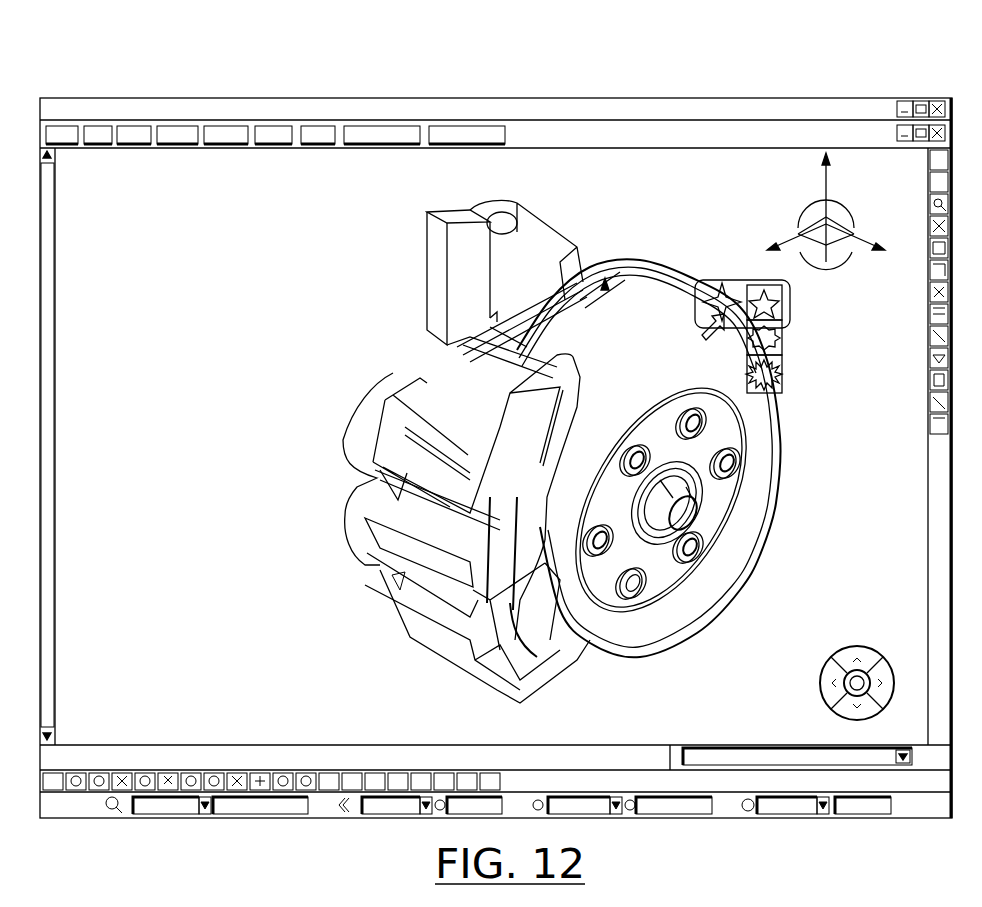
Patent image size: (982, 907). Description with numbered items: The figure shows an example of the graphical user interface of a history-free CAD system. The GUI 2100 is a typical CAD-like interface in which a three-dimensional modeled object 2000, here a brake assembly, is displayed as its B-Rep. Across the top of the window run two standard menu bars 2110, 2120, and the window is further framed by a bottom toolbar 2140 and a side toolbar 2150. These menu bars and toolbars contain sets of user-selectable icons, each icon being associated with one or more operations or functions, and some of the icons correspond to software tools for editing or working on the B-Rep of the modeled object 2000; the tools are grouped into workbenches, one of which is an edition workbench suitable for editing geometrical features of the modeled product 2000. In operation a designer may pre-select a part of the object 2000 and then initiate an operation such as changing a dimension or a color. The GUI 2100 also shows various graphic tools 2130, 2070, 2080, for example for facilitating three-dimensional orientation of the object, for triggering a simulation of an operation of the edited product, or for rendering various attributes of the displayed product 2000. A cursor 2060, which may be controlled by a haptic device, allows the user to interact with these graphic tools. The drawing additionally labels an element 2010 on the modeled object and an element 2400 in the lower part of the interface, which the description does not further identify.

The 3D modeled object 2000 is at (385, 270).
The brake caliper 2010 is at (445, 377).
The cursor 2060 is at (712, 336).
The graphic tool 2070 is at (736, 285).
The graphic tool 2080 is at (782, 340).
The GUI 2100 is at (757, 670).
The menu bar 2110 is at (608, 107).
The menu bar 2120 is at (694, 137).
The graphic tool 2130 is at (843, 253).
The bottom toolbar 2140 is at (511, 750).
The side toolbar 2150 is at (932, 436).
The navigation widget 2400 is at (840, 637).